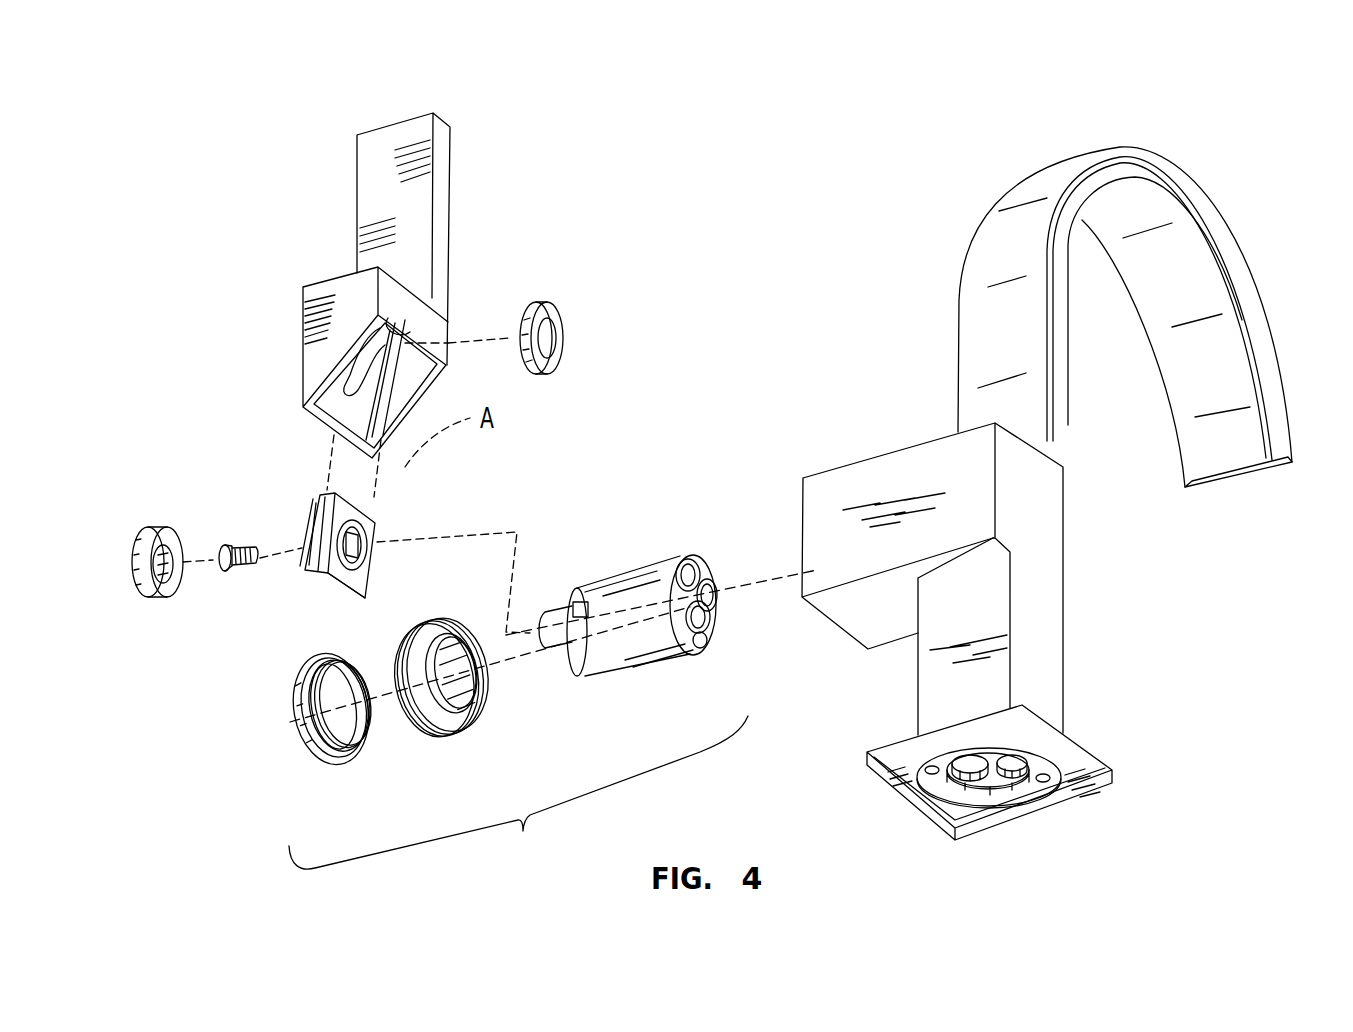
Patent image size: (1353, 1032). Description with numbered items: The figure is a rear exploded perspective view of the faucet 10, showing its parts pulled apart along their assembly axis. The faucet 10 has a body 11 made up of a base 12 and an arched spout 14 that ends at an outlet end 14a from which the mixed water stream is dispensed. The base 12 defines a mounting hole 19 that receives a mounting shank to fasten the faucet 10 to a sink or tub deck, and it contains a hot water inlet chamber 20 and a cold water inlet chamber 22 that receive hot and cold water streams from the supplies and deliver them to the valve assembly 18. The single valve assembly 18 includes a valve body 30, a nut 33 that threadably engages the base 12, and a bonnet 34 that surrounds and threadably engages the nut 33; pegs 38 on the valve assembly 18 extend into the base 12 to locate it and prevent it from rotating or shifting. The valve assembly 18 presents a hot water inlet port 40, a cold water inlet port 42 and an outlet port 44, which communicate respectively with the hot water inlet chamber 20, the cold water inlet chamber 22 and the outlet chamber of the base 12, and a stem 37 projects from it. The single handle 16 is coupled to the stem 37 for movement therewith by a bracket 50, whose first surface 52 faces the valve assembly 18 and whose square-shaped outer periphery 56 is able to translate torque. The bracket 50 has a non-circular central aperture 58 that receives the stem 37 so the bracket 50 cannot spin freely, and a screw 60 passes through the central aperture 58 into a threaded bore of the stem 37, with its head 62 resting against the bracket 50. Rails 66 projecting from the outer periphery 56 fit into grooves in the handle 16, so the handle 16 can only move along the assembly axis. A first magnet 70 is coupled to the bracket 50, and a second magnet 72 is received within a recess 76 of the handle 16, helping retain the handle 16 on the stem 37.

The faucet 10 is at (963, 143).
The body 11 is at (1048, 662).
The base 12 is at (1049, 550).
The spout 14 is at (1220, 228).
The outlet end 14a is at (1238, 487).
The handle 16 is at (447, 170).
The valve assembly 18 is at (518, 792).
The mounting hole 19 is at (962, 772).
The hot water inlet chamber 20 is at (988, 762).
The cold water inlet chamber 22 is at (1018, 770).
The valve body 30 is at (645, 563).
The nut 33 is at (477, 703).
The bonnet 34 is at (303, 740).
The stem 37 is at (562, 617).
The pegs 38 is at (700, 657).
The hot water inlet port 40 is at (698, 562).
The cold water inlet port 42 is at (727, 583).
The outlet port 44 is at (713, 623).
The bracket 50 is at (383, 523).
The first surface 52 is at (373, 583).
The outer periphery 56 is at (323, 590).
The central aperture 58 is at (360, 543).
The screw 60 is at (242, 567).
The head 62 is at (222, 550).
The rails 66 is at (313, 508).
The first magnet 70 is at (153, 600).
The second magnet 72 is at (565, 340).
The recess 76 is at (405, 345).